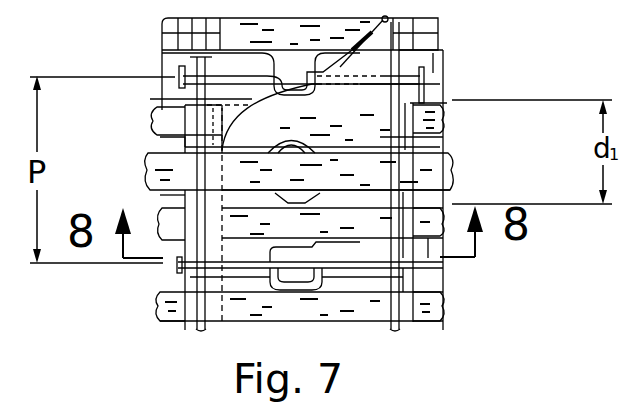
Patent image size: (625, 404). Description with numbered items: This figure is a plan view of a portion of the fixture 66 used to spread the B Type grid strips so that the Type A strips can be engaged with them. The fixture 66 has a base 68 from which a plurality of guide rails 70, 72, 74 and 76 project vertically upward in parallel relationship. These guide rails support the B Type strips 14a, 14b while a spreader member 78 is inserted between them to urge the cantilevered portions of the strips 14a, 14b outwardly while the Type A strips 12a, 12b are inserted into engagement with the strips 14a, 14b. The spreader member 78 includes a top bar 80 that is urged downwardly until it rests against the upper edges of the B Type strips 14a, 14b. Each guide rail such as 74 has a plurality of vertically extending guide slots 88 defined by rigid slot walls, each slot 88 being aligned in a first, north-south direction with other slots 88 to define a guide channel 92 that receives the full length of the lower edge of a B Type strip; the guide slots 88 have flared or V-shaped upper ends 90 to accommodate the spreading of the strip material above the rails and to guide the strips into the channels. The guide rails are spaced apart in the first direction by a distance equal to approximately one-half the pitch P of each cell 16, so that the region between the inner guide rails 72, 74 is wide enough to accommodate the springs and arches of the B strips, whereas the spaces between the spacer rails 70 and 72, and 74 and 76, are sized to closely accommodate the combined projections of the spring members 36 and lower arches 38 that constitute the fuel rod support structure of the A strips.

The Type A strip 12a is at (378, 31).
The Type A strip 12b is at (238, 262).
The B Type strip 14a is at (172, 282).
The B Type strip 14b is at (418, 277).
The cell 16 is at (415, 138).
The spring member 36 is at (180, 72).
The lower arch 38 is at (183, 97).
The fixture 66 is at (455, 99).
The base 68 is at (455, 95).
The guide rail 70 is at (168, 34).
The guide rail 72 is at (157, 130).
The guide rail 74 is at (162, 220).
The guide rail 76 is at (165, 310).
The spreader member 78 is at (465, 151).
The top bar 80 is at (415, 181).
The guide slot 88 is at (412, 17).
The V-shaped upper end 90 is at (398, 56).
The guide channel 92 is at (393, 345).